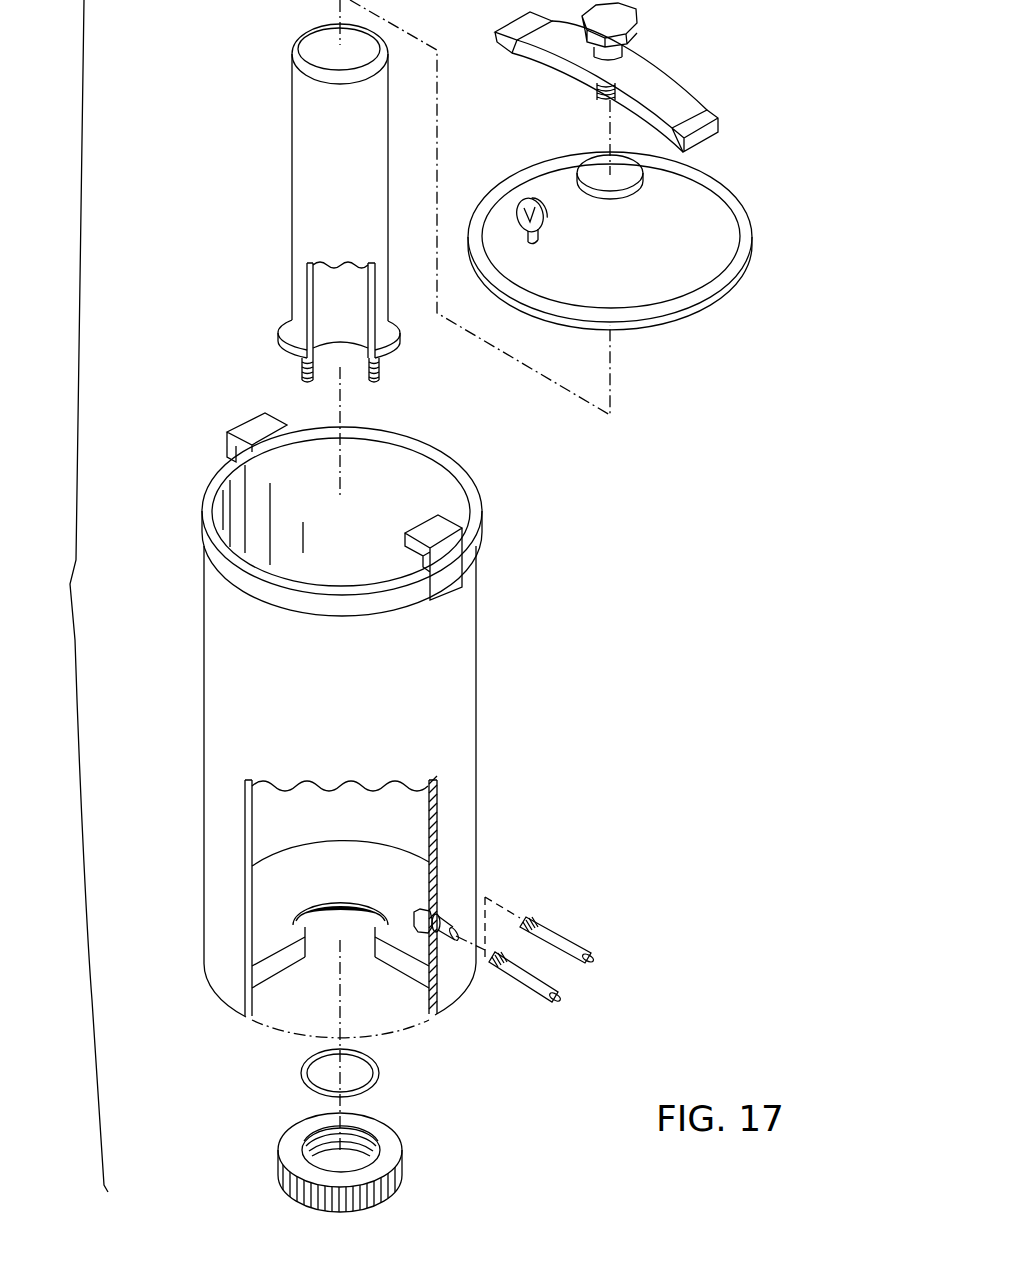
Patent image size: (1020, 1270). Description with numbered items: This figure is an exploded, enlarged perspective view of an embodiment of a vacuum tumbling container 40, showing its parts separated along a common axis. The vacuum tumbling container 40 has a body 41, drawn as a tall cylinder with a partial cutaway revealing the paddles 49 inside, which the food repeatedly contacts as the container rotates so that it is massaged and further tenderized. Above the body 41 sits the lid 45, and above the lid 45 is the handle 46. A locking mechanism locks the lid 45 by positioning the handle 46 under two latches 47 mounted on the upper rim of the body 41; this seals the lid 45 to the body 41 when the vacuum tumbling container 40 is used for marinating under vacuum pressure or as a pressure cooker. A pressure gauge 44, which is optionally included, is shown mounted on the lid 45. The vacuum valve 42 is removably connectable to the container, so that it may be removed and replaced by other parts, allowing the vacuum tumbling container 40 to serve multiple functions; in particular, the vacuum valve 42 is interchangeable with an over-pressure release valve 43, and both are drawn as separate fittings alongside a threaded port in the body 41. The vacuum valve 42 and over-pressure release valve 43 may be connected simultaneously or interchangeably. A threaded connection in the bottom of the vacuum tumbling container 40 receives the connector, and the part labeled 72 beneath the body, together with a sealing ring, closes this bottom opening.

The vacuum tumbling container 40 is at (495, 668).
The body 41 is at (203, 657).
The vacuum valve 42 is at (542, 992).
The over-pressure release valve 43 is at (335, 929).
The pressure gauge 44 is at (533, 200).
The lid 45 is at (749, 232).
The handle 46 is at (643, 70).
The latches 47 is at (440, 518).
The paddles 49 is at (445, 912).
The cap nut 72 is at (395, 1148).